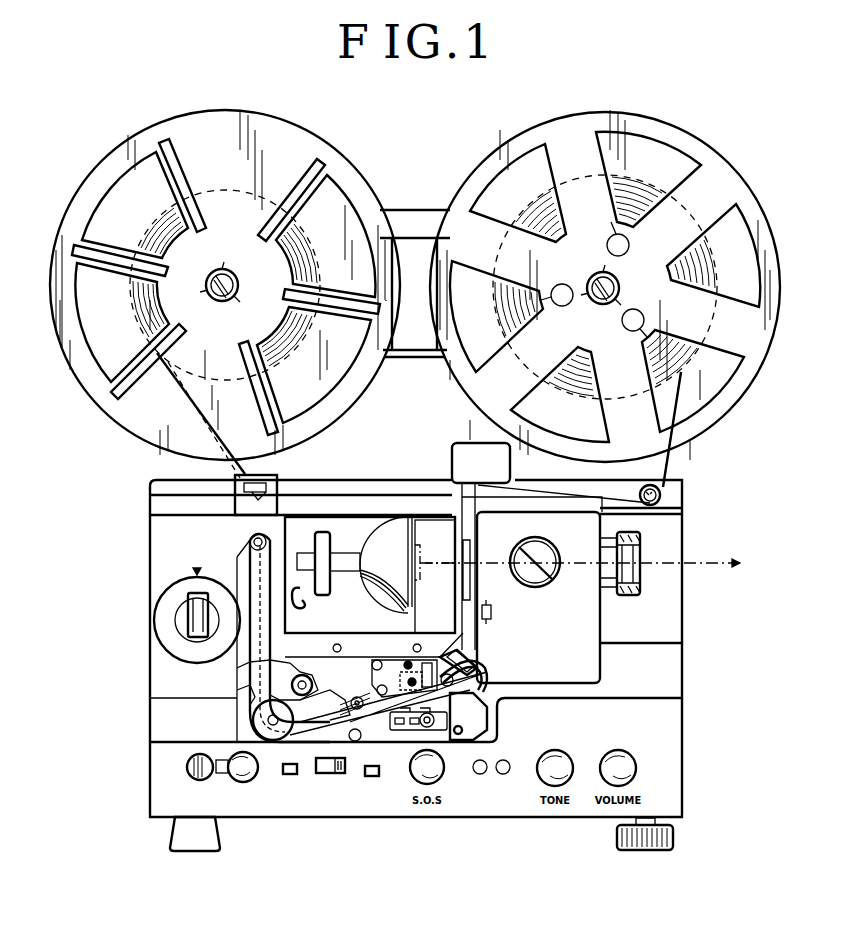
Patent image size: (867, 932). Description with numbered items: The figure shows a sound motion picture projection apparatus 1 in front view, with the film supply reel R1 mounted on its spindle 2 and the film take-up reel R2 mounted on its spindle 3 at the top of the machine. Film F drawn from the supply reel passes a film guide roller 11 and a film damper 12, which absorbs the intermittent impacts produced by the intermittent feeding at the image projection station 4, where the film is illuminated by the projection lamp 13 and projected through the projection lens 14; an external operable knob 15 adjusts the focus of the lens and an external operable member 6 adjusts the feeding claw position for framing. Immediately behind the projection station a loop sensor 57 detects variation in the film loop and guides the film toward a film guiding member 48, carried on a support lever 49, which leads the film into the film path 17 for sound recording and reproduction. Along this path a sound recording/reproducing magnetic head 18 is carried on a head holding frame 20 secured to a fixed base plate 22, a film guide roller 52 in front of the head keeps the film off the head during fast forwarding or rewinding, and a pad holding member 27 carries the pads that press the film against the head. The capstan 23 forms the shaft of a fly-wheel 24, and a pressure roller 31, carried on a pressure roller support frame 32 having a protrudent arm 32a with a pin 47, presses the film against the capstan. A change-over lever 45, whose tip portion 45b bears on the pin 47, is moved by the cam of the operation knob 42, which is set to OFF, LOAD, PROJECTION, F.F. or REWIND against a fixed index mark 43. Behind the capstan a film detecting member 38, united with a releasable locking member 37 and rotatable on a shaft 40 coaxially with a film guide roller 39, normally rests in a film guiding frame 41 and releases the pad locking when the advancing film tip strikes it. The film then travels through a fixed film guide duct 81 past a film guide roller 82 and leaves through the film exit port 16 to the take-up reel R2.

The sound motion picture projection apparatus 1 is at (398, 410).
The spindle for film supply reel 2 is at (593, 279).
The spindle for film take-up reel 3 is at (218, 275).
The image projection station 4 is at (497, 576).
The external operable member 6 is at (492, 618).
The film guide roller 11 is at (664, 500).
The film damper 12 is at (475, 487).
The projection lamp 13 is at (398, 528).
The projection lens 14 is at (611, 575).
The external operable knob 15 is at (540, 563).
The film exit port 16 is at (277, 482).
The film path 17 is at (374, 744).
The sound recording/reproducing magnetic head 18 is at (482, 780).
The head holding frame 20 is at (392, 660).
The fixed base plate 22 is at (356, 662).
The capstan 23 is at (366, 666).
The fly-wheel 24 is at (504, 780).
The pad holding member 27 is at (430, 728).
The pressure roller 31 is at (356, 742).
The pressure roller support frame 32 is at (362, 744).
The protrudent arm 32a is at (288, 742).
The releasable locking member 37 is at (312, 743).
The film detecting member 38 is at (343, 722).
The film guide roller 39 is at (258, 748).
The shaft 40 is at (270, 722).
The film guiding frame 41 is at (248, 700).
The operation knob 42 is at (193, 620).
The fixed index mark 43 is at (194, 565).
The change-over lever 45 is at (240, 664).
The tip portion 45b is at (292, 686).
The pin 47 is at (298, 690).
The film guiding member 48 is at (483, 678).
The support lever 49 is at (482, 706).
The film guide roller 52 is at (446, 662).
The loop sensor 57 is at (470, 660).
The fixed film guide duct 81 is at (252, 563).
The film guide roller 82 is at (250, 540).
The film F is at (668, 474).
The film supply reel R1 is at (728, 393).
The film take-up reel R2 is at (110, 410).